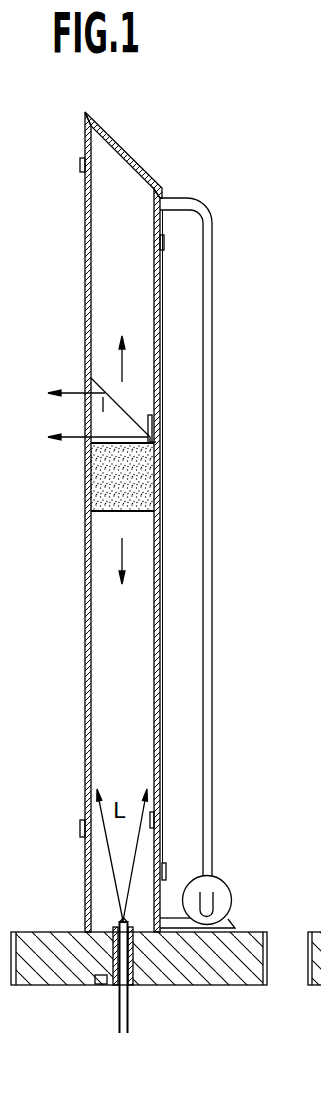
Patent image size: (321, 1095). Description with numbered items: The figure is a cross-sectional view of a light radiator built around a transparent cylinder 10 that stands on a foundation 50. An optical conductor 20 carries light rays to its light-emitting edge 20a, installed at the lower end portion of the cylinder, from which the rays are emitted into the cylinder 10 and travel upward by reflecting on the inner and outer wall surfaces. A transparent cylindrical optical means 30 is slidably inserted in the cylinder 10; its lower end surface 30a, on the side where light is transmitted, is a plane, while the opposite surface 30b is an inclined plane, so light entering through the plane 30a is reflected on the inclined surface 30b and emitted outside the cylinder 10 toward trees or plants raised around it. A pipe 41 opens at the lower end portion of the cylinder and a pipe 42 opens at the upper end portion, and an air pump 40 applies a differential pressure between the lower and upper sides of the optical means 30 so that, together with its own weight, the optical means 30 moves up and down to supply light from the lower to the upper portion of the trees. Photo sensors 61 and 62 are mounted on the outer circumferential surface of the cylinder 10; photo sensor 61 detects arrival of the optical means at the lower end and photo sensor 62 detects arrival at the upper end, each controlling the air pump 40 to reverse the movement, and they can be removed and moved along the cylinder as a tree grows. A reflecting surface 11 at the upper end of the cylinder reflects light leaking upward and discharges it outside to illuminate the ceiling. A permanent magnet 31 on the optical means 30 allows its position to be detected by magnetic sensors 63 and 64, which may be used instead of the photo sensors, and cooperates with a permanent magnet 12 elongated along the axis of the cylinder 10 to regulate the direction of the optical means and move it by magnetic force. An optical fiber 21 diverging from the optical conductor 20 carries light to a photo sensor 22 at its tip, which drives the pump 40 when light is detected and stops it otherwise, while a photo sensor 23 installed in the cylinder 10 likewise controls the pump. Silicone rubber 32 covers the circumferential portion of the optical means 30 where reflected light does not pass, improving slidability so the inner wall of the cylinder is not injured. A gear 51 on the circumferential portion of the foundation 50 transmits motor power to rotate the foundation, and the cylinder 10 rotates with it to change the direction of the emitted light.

The transparent cylinder 10 is at (85, 270).
The reflecting surface 11 is at (123, 162).
The permanent magnet 12 is at (165, 590).
The optical conductor 20 is at (130, 997).
The light-emitting edge 20a is at (119, 918).
The optical fiber 21 is at (113, 990).
The photo sensor 22 is at (98, 986).
The photo sensor 23 is at (160, 822).
The optical means 30 is at (100, 492).
The plane surface 30a is at (127, 511).
The inclined surface 30b is at (127, 416).
The permanent magnet 31 is at (157, 432).
The silicone rubber covering 32 is at (100, 467).
The air pump 40 is at (222, 890).
The pipe 41 is at (168, 918).
The pipe 42 is at (208, 683).
The foundation 50 is at (222, 982).
The gear 51 is at (268, 968).
The photo sensor 61 is at (80, 826).
The photo sensor 62 is at (80, 165).
The magnetic sensor 63 is at (166, 865).
The magnetic sensor 64 is at (165, 245).